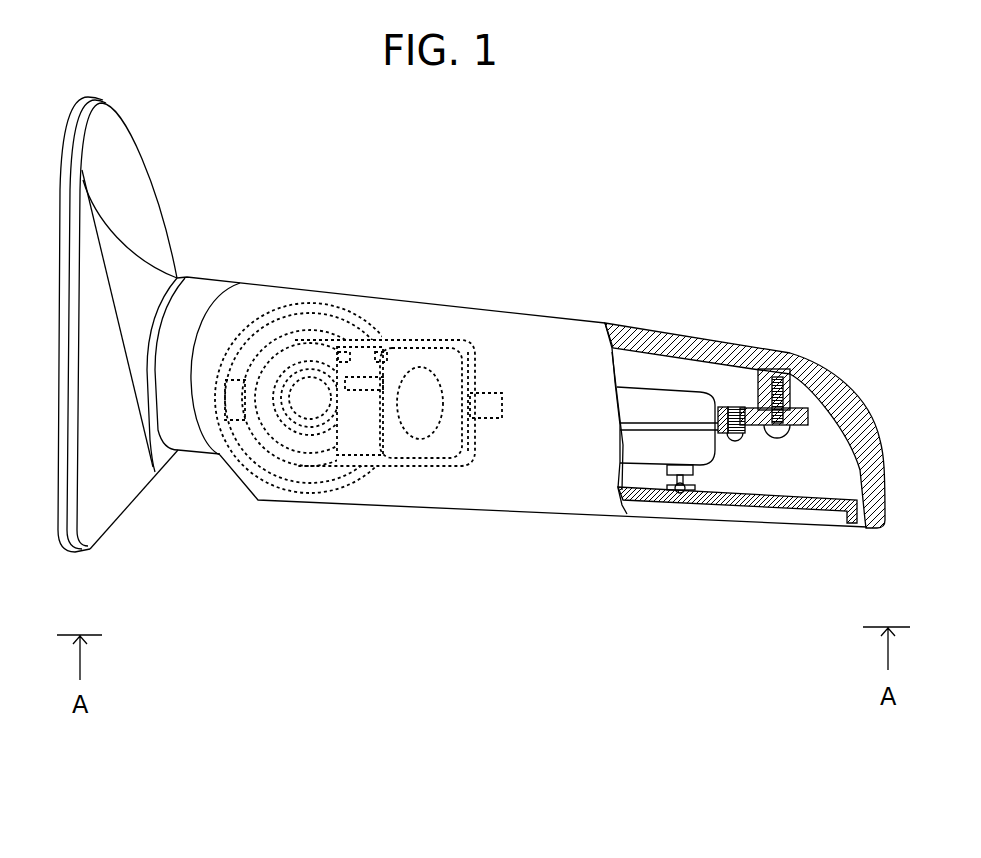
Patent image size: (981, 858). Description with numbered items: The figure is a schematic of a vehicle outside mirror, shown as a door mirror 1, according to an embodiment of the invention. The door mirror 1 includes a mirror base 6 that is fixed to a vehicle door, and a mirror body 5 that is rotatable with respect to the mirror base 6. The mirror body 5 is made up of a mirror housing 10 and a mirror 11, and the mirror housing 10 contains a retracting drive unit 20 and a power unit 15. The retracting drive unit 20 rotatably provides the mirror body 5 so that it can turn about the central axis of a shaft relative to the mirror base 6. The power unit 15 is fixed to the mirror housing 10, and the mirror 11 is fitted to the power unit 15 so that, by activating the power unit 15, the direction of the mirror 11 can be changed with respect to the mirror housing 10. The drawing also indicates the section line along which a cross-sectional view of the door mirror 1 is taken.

The door mirror 1 is at (504, 274).
The mirror body 5 is at (487, 510).
The mirror base 6 is at (125, 520).
The mirror housing 10 is at (722, 338).
The mirror 11 is at (750, 515).
The power unit 15 is at (647, 388).
The retracting drive unit 20 is at (386, 340).